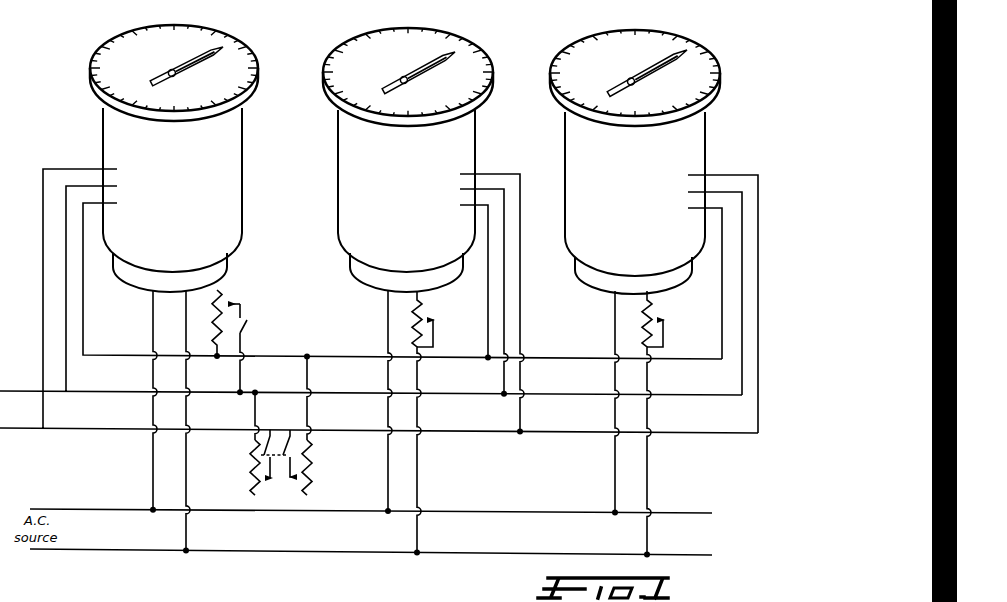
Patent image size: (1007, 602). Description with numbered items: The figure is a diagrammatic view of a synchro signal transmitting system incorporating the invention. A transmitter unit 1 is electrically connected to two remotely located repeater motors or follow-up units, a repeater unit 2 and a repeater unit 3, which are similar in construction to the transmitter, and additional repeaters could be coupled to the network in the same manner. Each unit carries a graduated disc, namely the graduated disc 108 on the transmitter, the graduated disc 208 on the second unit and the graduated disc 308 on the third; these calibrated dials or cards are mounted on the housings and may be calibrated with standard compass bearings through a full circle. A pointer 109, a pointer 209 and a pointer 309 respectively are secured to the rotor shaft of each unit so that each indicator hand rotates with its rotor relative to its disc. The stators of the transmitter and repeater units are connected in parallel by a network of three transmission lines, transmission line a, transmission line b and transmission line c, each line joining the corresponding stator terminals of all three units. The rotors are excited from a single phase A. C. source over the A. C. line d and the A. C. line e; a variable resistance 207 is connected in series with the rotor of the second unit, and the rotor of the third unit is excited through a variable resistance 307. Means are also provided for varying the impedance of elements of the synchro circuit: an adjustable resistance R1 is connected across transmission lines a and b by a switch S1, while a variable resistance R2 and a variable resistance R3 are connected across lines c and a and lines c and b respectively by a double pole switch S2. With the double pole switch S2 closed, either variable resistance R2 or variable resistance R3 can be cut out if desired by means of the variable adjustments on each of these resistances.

The transmitter unit 1 is at (195, 158).
The repeater unit 2 is at (427, 160).
The repeater unit 3 is at (655, 159).
The graduated disc 108 is at (223, 46).
The pointer 109 is at (208, 58).
The graduated disc 208 is at (457, 50).
The pointer 209 is at (438, 62).
The graduated disc 308 is at (687, 51).
The pointer 309 is at (668, 63).
The variable resistance 207 is at (425, 306).
The variable resistance 307 is at (656, 306).
The adjustable resistance R1 is at (214, 299).
The variable resistance R2 is at (312, 468).
The variable resistance R3 is at (248, 463).
The switch S1 is at (245, 321).
The double pole switch S2 is at (280, 443).
The transmission line a is at (130, 355).
The transmission line b is at (130, 392).
The transmission line c is at (130, 428).
The A. C. line d is at (122, 510).
The A. C. line e is at (125, 550).